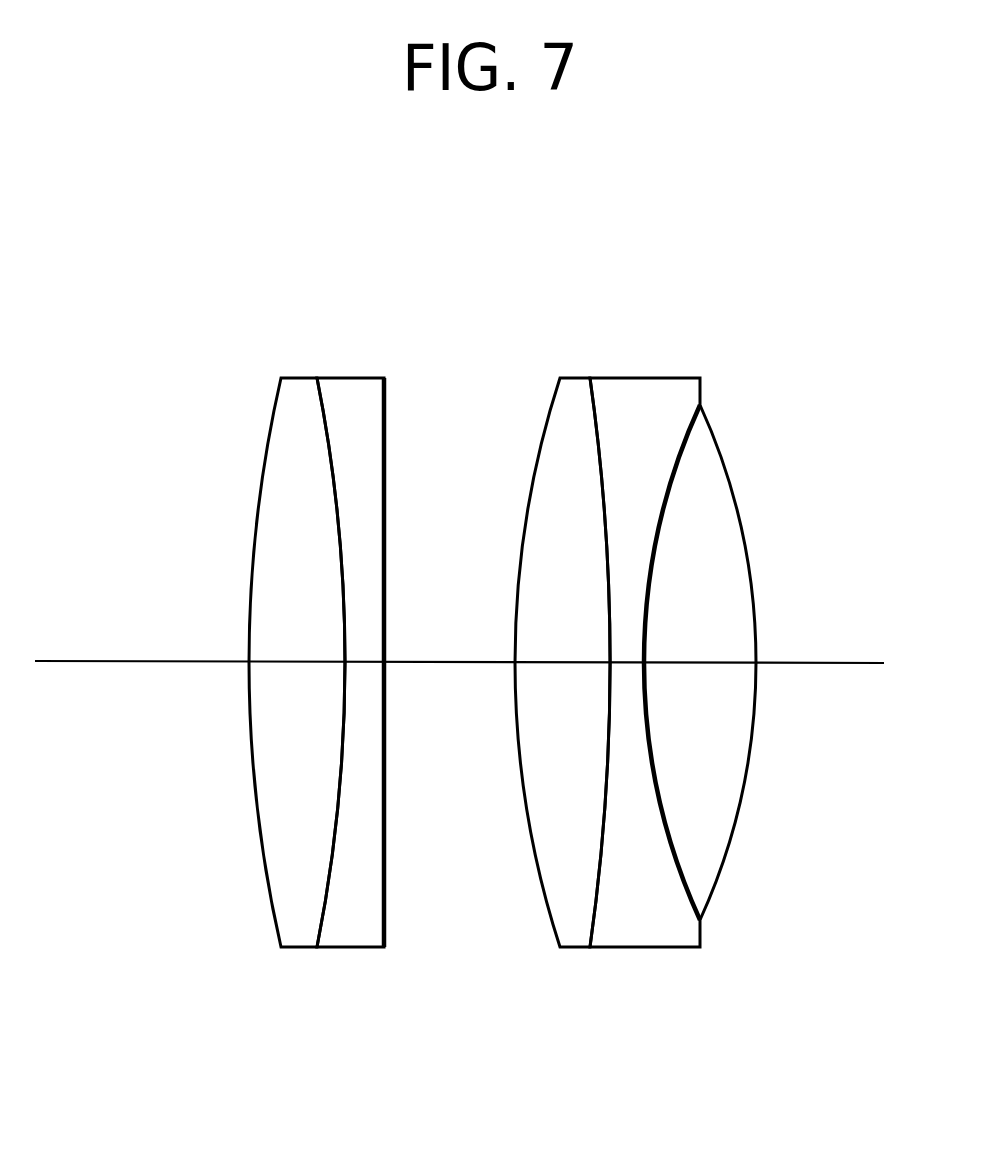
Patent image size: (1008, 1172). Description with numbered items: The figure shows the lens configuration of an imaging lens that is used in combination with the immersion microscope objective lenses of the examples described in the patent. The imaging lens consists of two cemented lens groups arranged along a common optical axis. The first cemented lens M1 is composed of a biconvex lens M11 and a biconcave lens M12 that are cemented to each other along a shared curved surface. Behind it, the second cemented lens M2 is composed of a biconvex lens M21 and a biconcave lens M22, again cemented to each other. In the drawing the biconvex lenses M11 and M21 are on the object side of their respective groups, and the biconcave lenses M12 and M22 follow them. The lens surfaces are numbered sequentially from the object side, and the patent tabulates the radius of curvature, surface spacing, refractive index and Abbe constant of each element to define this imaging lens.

The first cemented lens M1 is at (422, 285).
The biconvex lens M11 is at (300, 392).
The biconcave lens M12 is at (355, 392).
The second cemented lens M2 is at (700, 285).
The biconvex lens M21 is at (576, 392).
The biconcave lens M22 is at (632, 392).